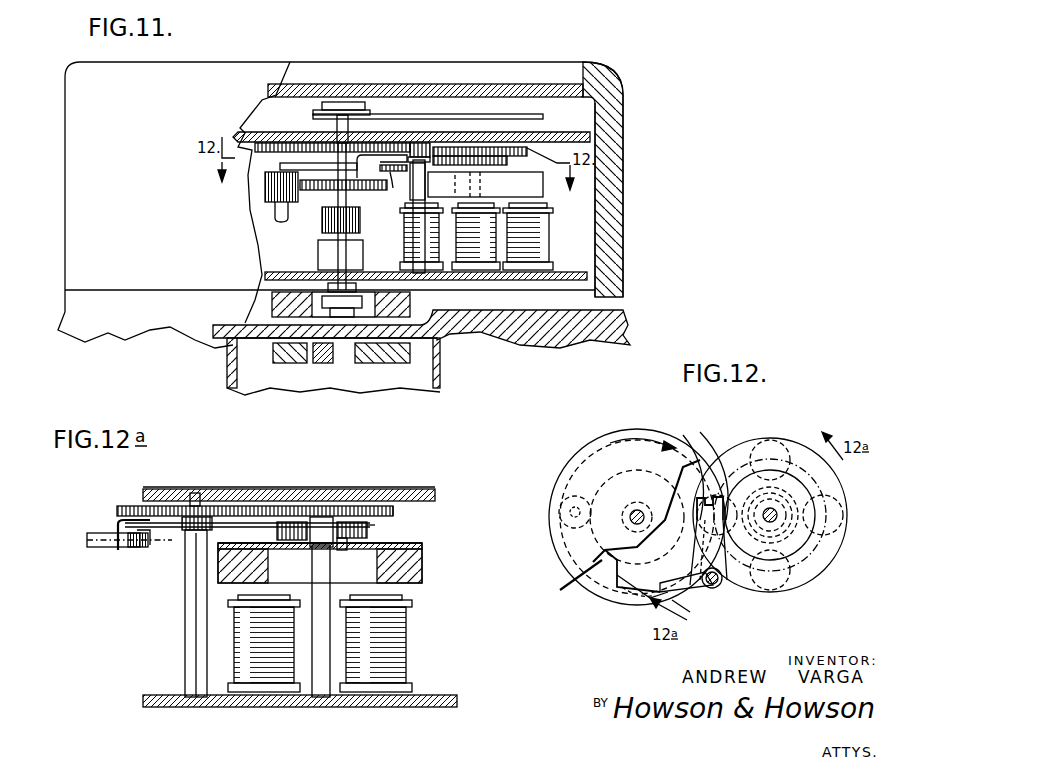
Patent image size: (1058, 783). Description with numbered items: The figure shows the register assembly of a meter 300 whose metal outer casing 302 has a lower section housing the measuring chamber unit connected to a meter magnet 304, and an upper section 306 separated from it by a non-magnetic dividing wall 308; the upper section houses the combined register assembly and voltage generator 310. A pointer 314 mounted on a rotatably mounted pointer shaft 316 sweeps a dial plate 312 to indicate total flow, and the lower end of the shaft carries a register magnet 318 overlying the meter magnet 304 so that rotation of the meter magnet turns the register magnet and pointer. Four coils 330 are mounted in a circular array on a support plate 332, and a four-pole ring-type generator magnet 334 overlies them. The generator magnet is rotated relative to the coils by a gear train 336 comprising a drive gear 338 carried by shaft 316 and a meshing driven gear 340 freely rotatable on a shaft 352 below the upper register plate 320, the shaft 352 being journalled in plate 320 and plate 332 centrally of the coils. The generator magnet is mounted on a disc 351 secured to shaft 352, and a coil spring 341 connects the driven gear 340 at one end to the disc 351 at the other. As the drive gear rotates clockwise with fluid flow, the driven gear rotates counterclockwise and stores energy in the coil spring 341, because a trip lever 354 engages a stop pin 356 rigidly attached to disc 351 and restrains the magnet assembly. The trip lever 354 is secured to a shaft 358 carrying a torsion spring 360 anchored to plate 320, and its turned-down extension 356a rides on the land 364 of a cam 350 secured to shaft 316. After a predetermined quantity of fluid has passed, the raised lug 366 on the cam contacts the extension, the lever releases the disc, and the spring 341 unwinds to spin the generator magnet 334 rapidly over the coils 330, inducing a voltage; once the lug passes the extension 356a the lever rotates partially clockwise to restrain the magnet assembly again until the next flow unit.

In FIG. 11, the meter 300 is at (628, 103).
In FIG. 11, the metal outer casing 302 is at (622, 190).
In FIG. 11, the meter magnet 304 is at (297, 367).
In FIG. 11, the upper section 306 is at (668, 271).
In FIG. 11, the non-magnetic dividing wall 308 is at (512, 330).
In FIG. 11, the combined register assembly and voltage generator 310 is at (277, 250).
In FIG. 11, the dial plate 312 is at (270, 95).
In FIG. 12A, the dial plate 312 is at (350, 492).
In FIG. 11, the pointer 314 is at (505, 114).
In FIG. 11, the pointer shaft 316 is at (337, 127).
In FIG. 12, the pointer shaft 316 is at (630, 522).
In FIG. 11, the register magnet 318 is at (273, 303).
In FIG. 11, the upper register plate 320 is at (588, 142).
In FIG. 12A, the upper register plate 320 is at (262, 492).
In FIG. 11, the coils 330 is at (487, 235).
In FIG. 12A, the coils 330 is at (279, 653).
In FIG. 12, the coils 330 is at (775, 442).
In FIG. 11, the support plate 332 is at (523, 281).
In FIG. 12A, the support plate 332 is at (153, 695).
In FIG. 11, the generator magnet 334 is at (538, 190).
In FIG. 12A, the generator magnet 334 is at (457, 590).
In FIG. 12, the generator magnet 334 is at (813, 477).
In FIG. 12, the gear train 336 is at (607, 432).
In FIG. 11, the drive gear 338 is at (283, 163).
In FIG. 12A, the drive gear 338 is at (120, 505).
In FIG. 12, the drive gear 338 is at (683, 438).
In FIG. 11, the driven gear 340 is at (530, 147).
In FIG. 12A, the driven gear 340 is at (395, 512).
In FIG. 12, the driven gear 340 is at (743, 480).
In FIG. 11, the coil spring 341 is at (507, 162).
In FIG. 12A, the coil spring 341 is at (367, 530).
In FIG. 12, the coil spring 341 is at (840, 483).
In FIG. 11, the cam 350 is at (280, 182).
In FIG. 12A, the cam 350 is at (112, 533).
In FIG. 12, the cam 350 is at (585, 568).
In FIG. 12A, the disc 351 is at (413, 543).
In FIG. 12, the disc 351 is at (803, 457).
In FIG. 11, the shaft 352 is at (524, 193).
In FIG. 12A, the shaft 352 is at (317, 678).
In FIG. 12, the shaft 352 is at (777, 520).
In FIG. 11, the trip lever 354 is at (462, 196).
In FIG. 12A, the trip lever 354 is at (180, 528).
In FIG. 12, the trip lever 354 is at (682, 607).
In FIG. 12A, the stop pin 356 is at (268, 550).
In FIG. 12, the stop pin 356 is at (705, 497).
In FIG. 11, the extension 356a is at (396, 205).
In FIG. 12A, the extension 356a is at (128, 550).
In FIG. 11, the shaft 358 is at (417, 227).
In FIG. 12A, the shaft 358 is at (188, 642).
In FIG. 12, the shaft 358 is at (687, 590).
In FIG. 11, the torsion spring 360 is at (422, 148).
In FIG. 12A, the torsion spring 360 is at (196, 493).
In FIG. 12, the torsion spring 360 is at (730, 593).
In FIG. 12, the land 364 is at (648, 602).
In FIG. 12, the raised lug 366 is at (630, 598).